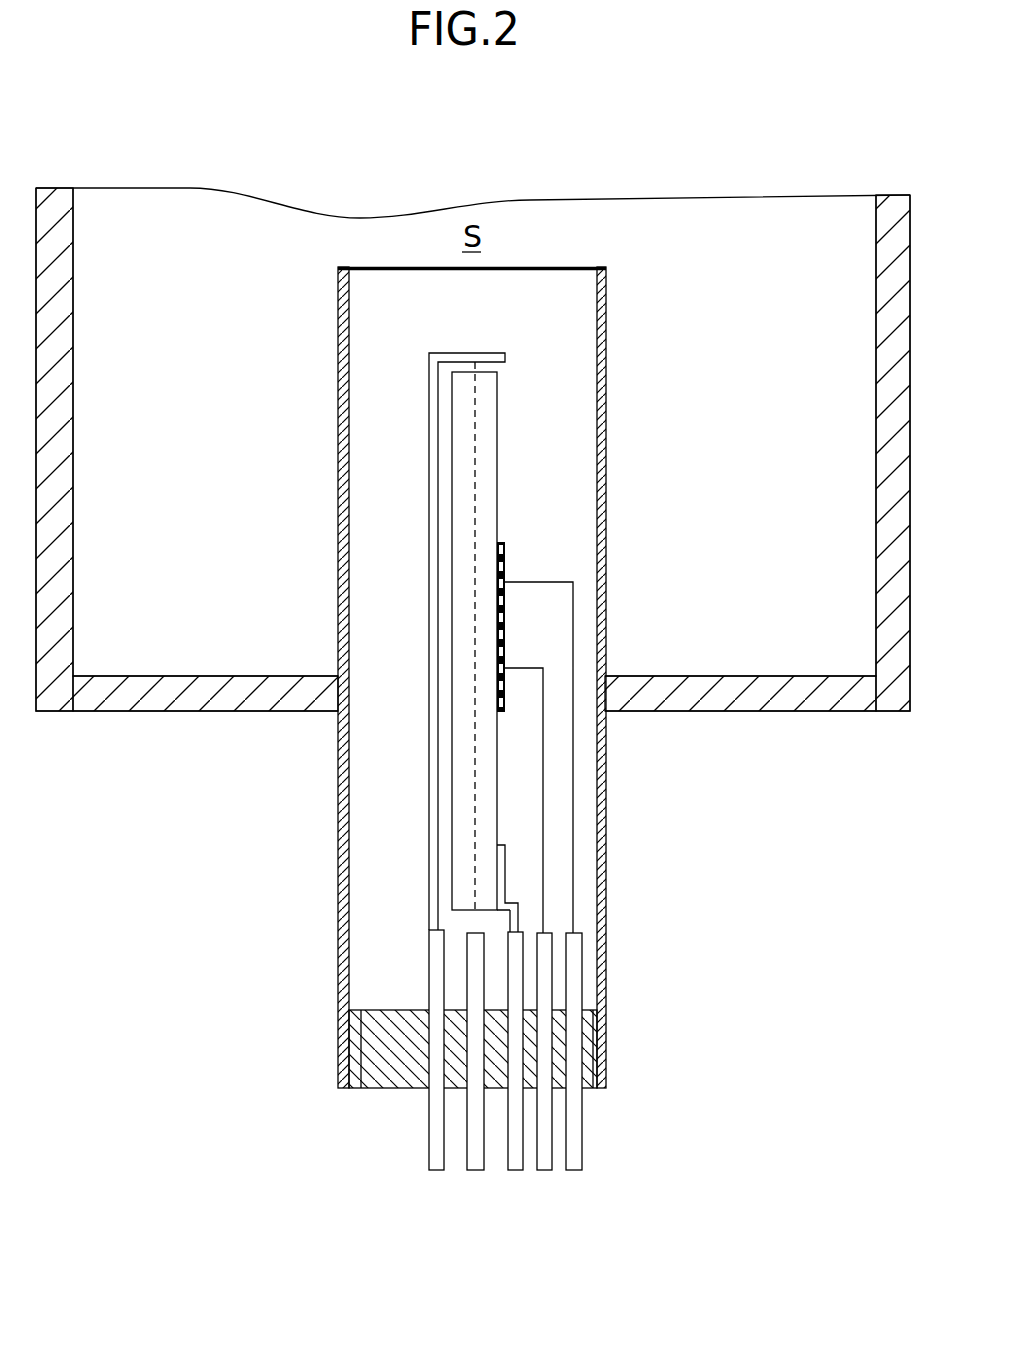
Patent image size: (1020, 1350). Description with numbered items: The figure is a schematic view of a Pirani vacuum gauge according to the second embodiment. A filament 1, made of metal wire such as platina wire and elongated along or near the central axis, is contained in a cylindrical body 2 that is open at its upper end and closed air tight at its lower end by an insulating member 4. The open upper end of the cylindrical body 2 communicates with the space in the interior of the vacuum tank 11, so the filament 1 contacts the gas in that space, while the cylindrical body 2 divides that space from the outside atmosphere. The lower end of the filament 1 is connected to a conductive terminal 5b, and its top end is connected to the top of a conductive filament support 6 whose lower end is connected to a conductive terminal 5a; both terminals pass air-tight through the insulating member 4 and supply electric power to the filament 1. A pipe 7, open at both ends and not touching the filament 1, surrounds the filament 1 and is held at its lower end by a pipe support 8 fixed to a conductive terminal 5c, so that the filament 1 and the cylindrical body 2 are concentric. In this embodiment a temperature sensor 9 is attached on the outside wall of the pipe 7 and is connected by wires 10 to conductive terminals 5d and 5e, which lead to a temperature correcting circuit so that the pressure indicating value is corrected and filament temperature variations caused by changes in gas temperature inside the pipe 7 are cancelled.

The filament 1 is at (475, 590).
The cylindrical body 2 is at (605, 451).
The insulating member 4 is at (385, 1048).
The conductive terminal 5a is at (439, 1170).
The conductive terminal 5b is at (476, 1170).
The conductive terminal 5c is at (515, 1170).
The conductive terminal 5d is at (546, 1170).
The conductive terminal 5e is at (572, 1170).
The conductive filament support 6 is at (438, 470).
The pipe 7 is at (497, 513).
The pipe support 8 is at (505, 872).
The temperature sensor 9 is at (503, 557).
The wires 10 is at (543, 790).
The vacuum tank 11 is at (190, 705).